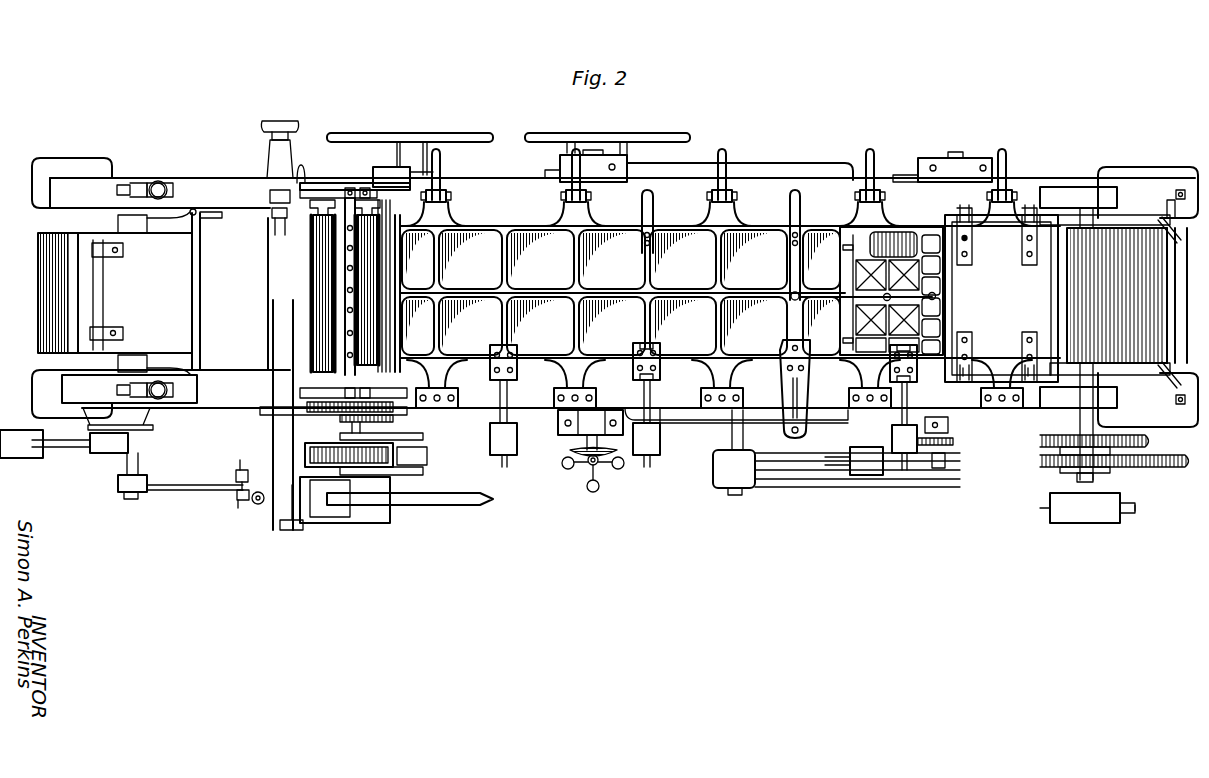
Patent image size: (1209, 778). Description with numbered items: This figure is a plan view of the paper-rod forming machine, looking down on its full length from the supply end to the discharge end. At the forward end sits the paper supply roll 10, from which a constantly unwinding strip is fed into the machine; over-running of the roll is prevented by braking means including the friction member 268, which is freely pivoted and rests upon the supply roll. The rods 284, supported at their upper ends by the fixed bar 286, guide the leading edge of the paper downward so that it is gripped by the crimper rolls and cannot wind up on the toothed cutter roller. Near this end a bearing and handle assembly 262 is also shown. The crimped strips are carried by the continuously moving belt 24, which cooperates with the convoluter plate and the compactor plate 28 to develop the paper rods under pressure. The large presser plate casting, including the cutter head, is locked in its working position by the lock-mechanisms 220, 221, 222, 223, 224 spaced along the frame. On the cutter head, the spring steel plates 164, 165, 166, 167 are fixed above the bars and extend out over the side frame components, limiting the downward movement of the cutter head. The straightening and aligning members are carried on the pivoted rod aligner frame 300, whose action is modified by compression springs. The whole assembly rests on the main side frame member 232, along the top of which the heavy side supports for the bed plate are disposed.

The paper supply roll 10 is at (44, 296).
The friction member 268 is at (162, 303).
The rods 284 is at (342, 304).
The fixed bar 286 is at (345, 284).
The handle and bearing block 262 is at (386, 167).
The lock-mechanism 220 is at (440, 192).
The lock-mechanism 221 is at (588, 196).
The lock-mechanism 222 is at (725, 195).
The lock-mechanism 223 is at (874, 192).
The lock-mechanism 224 is at (1007, 192).
The belt 24 is at (1118, 243).
The rod aligner frame 300 is at (898, 257).
The spring steel plate 166 is at (1021, 248).
The spring steel plate 167 is at (965, 266).
The spring steel plate 164 is at (965, 333).
The spring steel plate 165 is at (1030, 333).
The compactor plate 28 is at (473, 363).
The main side frame member 232 is at (690, 423).